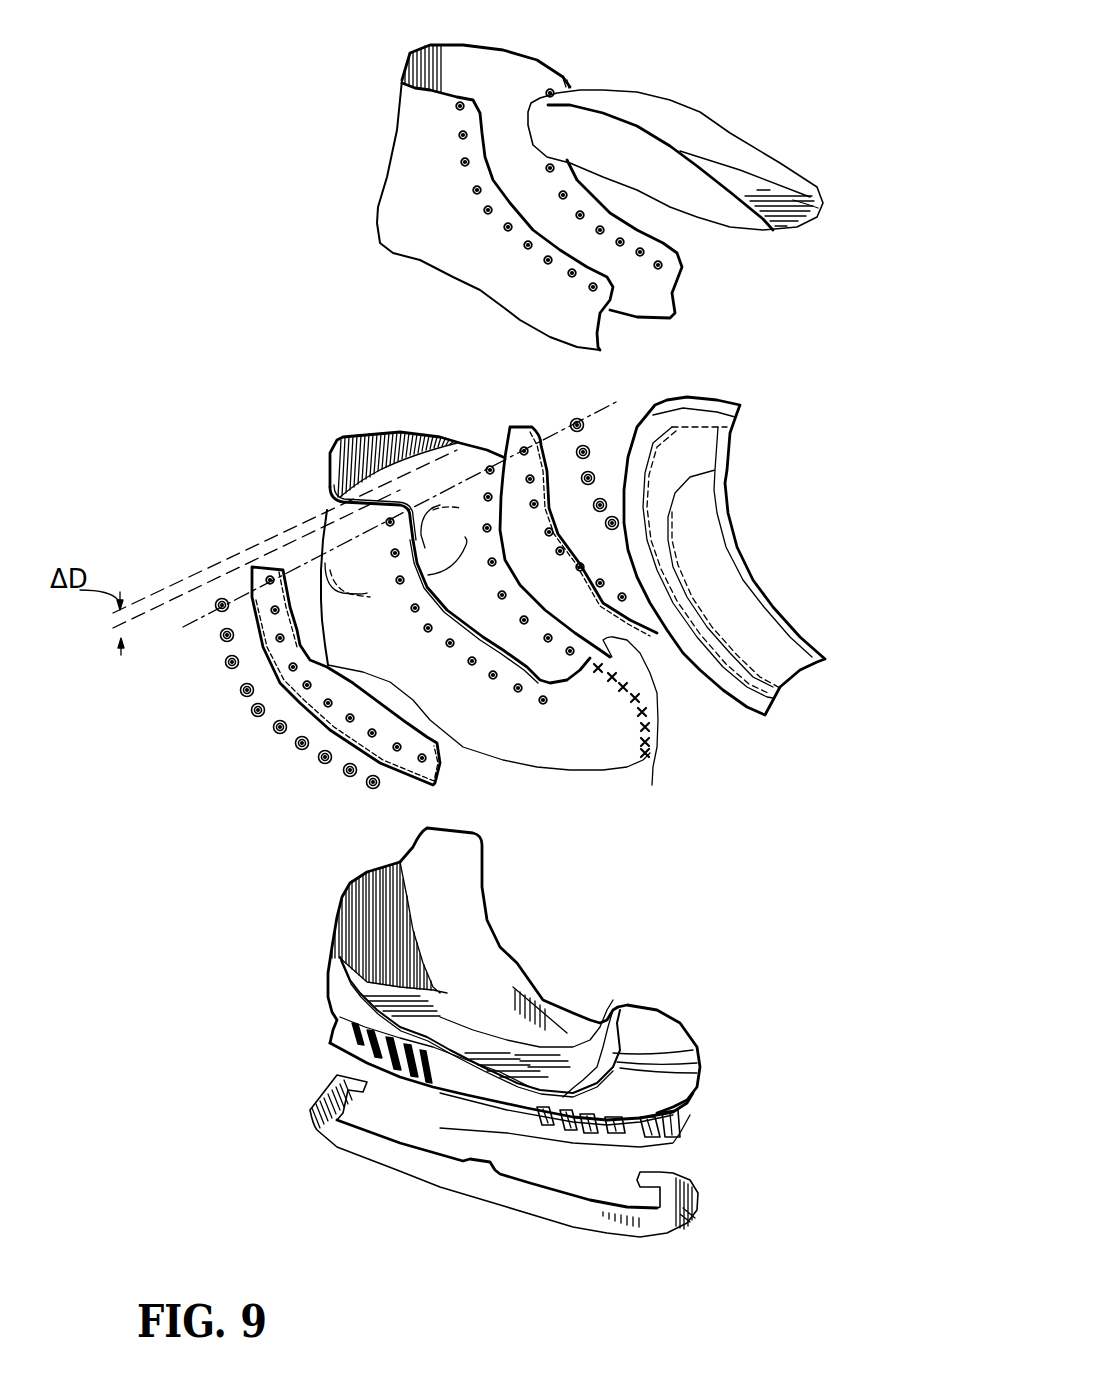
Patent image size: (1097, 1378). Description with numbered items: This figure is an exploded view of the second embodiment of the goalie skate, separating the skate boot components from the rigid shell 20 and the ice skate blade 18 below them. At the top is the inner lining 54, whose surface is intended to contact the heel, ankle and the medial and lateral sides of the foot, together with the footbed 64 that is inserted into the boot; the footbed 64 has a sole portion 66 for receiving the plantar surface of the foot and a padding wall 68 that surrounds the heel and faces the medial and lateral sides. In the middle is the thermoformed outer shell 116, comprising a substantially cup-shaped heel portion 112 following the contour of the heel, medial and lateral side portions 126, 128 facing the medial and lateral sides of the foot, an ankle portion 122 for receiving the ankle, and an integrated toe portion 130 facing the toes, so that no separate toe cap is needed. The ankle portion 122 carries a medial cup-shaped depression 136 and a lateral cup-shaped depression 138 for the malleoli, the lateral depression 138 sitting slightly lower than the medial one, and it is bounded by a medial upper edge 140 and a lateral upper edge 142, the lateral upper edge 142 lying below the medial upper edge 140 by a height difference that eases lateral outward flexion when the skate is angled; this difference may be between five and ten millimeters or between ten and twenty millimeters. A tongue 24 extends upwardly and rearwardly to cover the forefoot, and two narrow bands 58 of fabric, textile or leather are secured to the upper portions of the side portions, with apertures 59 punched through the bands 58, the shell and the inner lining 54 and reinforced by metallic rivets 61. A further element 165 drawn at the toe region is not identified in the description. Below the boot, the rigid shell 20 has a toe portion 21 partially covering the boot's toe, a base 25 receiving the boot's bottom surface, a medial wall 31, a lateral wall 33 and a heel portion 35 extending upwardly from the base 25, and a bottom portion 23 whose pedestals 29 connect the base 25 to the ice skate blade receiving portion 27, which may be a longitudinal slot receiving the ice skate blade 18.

The inner lining 54 is at (413, 153).
The footbed 64 is at (692, 107).
The sole portion 66 is at (793, 200).
The padding wall 68 is at (778, 160).
The outer shell 116 is at (360, 437).
The lateral upper edge 142 is at (380, 497).
The ankle portion 122 is at (337, 513).
The medial upper edge 140 is at (483, 443).
The medial cup-shaped depression 136 is at (443, 543).
The narrow bands 58 is at (257, 573).
The apertures 59 is at (270, 580).
The metallic rivets 61 is at (222, 600).
The lateral cup-shaped depression 138 is at (338, 568).
The heel portion 112 is at (322, 637).
The lateral side portion 128 is at (423, 660).
The toe portion 130 is at (613, 723).
The stitching 165 is at (652, 786).
The medial side portion 126 is at (657, 640).
The tongue 24 is at (710, 567).
The rigid shell 20 is at (348, 887).
The heel portion 35 is at (335, 980).
The base 25 is at (483, 1033).
The medial wall 31 is at (570, 1007).
The toe portion 21 is at (645, 1030).
The lateral wall 33 is at (400, 1032).
The pedestals 29 is at (383, 1060).
The bottom portion 23 is at (665, 1112).
The ice skate blade receiving portion 27 is at (670, 1137).
The ice skate blade 18 is at (673, 1202).